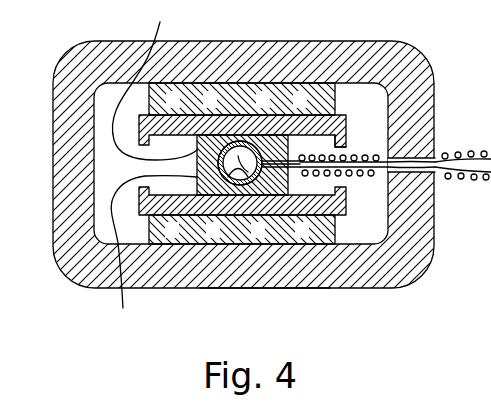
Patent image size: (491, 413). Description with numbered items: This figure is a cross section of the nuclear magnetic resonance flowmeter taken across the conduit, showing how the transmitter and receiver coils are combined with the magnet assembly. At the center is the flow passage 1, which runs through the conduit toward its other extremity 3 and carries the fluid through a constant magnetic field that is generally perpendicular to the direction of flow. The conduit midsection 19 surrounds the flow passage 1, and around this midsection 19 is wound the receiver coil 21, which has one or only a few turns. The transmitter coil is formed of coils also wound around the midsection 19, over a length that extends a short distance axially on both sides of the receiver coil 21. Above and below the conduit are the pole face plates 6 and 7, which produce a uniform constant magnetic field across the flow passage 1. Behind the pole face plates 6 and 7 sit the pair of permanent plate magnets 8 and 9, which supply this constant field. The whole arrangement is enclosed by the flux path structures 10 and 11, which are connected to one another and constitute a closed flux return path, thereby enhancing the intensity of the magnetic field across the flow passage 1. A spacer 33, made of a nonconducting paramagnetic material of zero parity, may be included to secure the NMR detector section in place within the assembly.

The flow passage 1 is at (246, 196).
The other extremity of the conduit 3 is at (395, 90).
The pole face plate 6 is at (346, 128).
The pole face plate 7 is at (346, 200).
The permanent plate magnet 8 is at (280, 114).
The permanent plate magnet 9 is at (287, 224).
The flux path structure 10 is at (203, 63).
The flux path structure 11 is at (322, 268).
The midsection of the conduit 19 is at (197, 195).
The receiver coil 21 is at (152, 255).
The spacer 33 is at (154, 80).